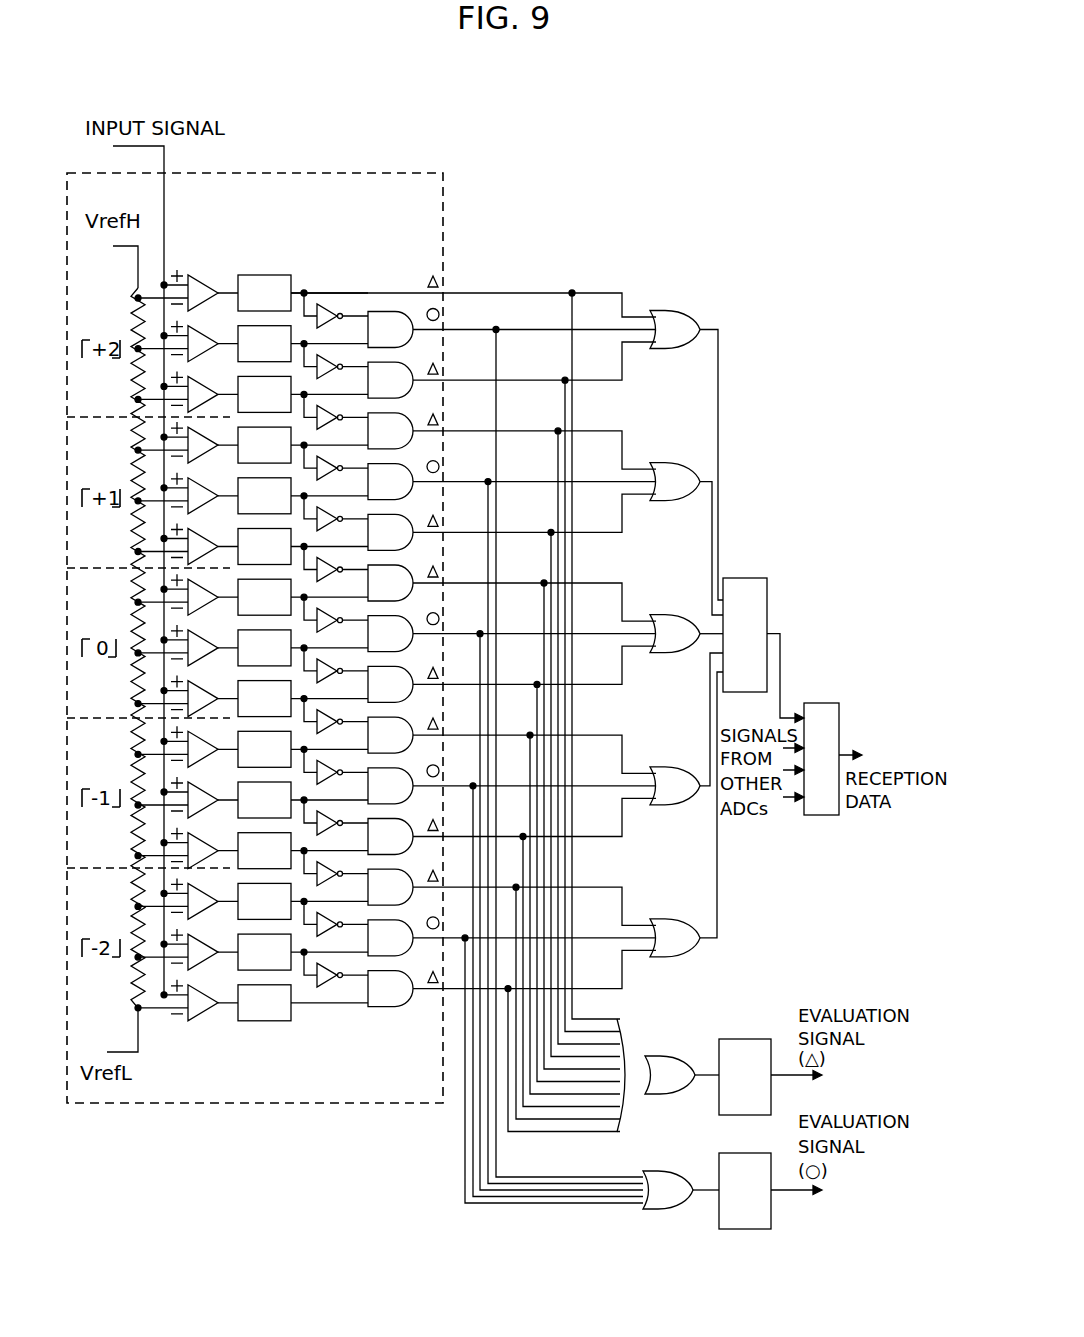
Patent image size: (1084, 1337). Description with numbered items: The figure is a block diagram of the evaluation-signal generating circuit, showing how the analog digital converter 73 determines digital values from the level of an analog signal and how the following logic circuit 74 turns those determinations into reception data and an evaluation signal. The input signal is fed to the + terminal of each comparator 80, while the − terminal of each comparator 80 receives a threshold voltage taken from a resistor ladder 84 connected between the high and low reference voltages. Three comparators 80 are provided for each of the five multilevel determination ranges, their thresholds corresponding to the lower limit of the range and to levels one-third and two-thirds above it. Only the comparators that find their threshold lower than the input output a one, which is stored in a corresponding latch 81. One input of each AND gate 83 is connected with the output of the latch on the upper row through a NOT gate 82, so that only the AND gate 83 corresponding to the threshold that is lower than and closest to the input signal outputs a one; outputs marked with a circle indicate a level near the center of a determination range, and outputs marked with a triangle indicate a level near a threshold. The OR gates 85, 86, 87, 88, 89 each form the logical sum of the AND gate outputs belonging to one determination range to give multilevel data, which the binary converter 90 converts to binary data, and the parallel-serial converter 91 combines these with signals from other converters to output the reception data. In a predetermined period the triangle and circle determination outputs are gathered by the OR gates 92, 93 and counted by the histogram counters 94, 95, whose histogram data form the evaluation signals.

The analog digital converter 73 is at (255, 623).
The logic circuit 74 is at (863, 959).
The comparator 80 is at (193, 275).
The latch 81 is at (262, 272).
The NOT gate 82 is at (328, 303).
The AND gate 83 is at (383, 303).
The resistor ladder 84 is at (121, 648).
The OR gate 85 is at (686, 440).
The OR gate 86 is at (686, 528).
The OR gate 87 is at (686, 621).
The OR gate 88 is at (686, 729).
The OR gate 89 is at (686, 814).
The binary converter 90 is at (782, 611).
The parallel-serial converter 91 is at (845, 709).
The OR gate 92 is at (682, 1062).
The OR gate 93 is at (681, 1178).
The histogram counter 94 is at (723, 1038).
The histogram counter 95 is at (722, 1231).